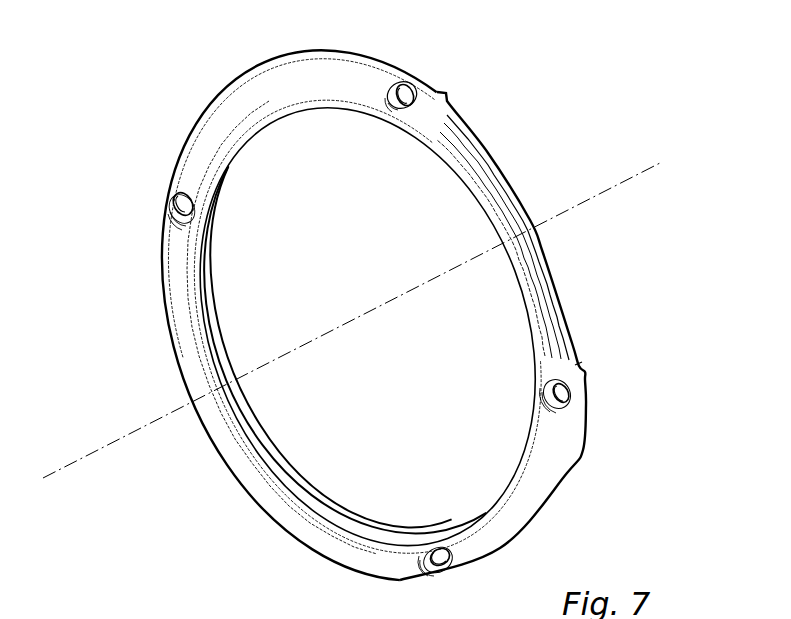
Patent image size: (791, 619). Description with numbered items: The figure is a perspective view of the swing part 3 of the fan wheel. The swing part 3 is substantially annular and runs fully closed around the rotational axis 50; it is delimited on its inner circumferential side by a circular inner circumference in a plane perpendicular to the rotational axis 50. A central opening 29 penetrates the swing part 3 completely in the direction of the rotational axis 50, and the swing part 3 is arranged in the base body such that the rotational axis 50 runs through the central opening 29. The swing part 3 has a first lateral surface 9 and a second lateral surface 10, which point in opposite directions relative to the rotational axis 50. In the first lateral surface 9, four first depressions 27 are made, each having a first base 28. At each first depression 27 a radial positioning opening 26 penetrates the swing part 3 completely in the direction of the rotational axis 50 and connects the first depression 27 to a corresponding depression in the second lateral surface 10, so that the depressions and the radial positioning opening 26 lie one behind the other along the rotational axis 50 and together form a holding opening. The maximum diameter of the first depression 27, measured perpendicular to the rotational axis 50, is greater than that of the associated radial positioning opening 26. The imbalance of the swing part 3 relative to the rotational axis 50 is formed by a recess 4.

The swing part 3 is at (158, 550).
The recess 4 is at (580, 345).
The first lateral surface 9 is at (205, 139).
The second lateral surface 10 is at (251, 68).
The radial positioning opening 26 is at (408, 86).
The first depression 27 is at (420, 76).
The first base 28 is at (397, 81).
The central opening 29 is at (460, 432).
The rotational axis 50 is at (633, 180).